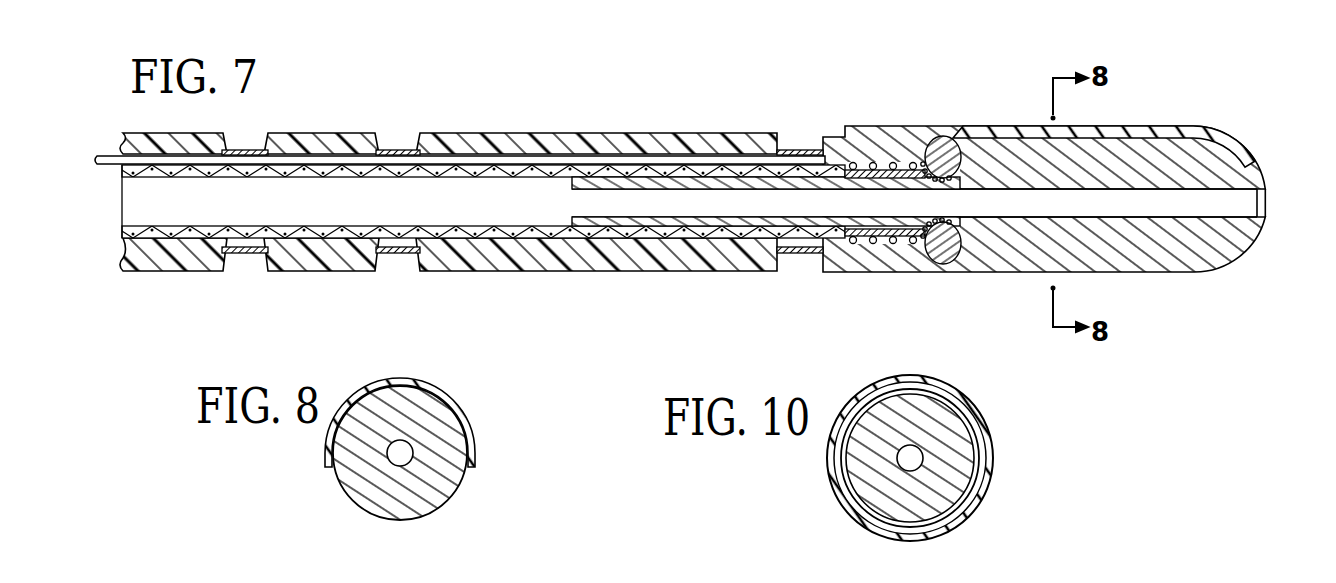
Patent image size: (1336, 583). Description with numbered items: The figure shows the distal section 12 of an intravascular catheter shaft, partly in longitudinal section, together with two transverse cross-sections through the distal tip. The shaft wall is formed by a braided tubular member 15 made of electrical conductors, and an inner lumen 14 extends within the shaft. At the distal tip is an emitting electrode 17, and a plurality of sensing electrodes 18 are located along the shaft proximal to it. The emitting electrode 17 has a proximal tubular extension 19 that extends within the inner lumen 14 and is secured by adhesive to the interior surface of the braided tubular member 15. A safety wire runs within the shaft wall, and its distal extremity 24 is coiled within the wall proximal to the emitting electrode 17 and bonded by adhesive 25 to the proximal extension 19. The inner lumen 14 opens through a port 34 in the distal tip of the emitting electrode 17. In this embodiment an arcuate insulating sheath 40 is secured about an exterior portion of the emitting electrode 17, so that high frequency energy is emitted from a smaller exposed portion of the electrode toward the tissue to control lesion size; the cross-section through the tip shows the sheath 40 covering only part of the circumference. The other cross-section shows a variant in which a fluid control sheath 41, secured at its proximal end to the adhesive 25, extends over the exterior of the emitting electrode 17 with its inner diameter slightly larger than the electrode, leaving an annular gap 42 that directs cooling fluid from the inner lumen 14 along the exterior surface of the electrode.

In FIG. 7, the distal section 12 is at (581, 133).
In FIG. 7, the inner lumen 14 is at (472, 228).
In FIG. 8, the inner lumen 14 is at (396, 456).
In FIG. 10, the inner lumen 14 is at (913, 451).
In FIG. 7, the braided tubular member 15 is at (320, 255).
In FIG. 7, the emitting electrode 17 is at (1136, 262).
In FIG. 8, the emitting electrode 17 is at (448, 483).
In FIG. 10, the emitting electrode 17 is at (876, 500).
In FIG. 7, the sensing electrodes 18 is at (395, 150).
In FIG. 7, the proximal tubular extension 19 is at (655, 224).
In FIG. 7, the distal extremity of the safety wire 24 is at (877, 240).
In FIG. 7, the adhesive 25 is at (900, 262).
In FIG. 7, the port 34 is at (1234, 208).
In FIG. 7, the arcuate insulating sheath 40 is at (1013, 128).
In FIG. 8, the arcuate insulating sheath 40 is at (468, 422).
In FIG. 10, the fluid control sheath 41 is at (982, 491).
In FIG. 10, the annular gap 42 is at (843, 467).